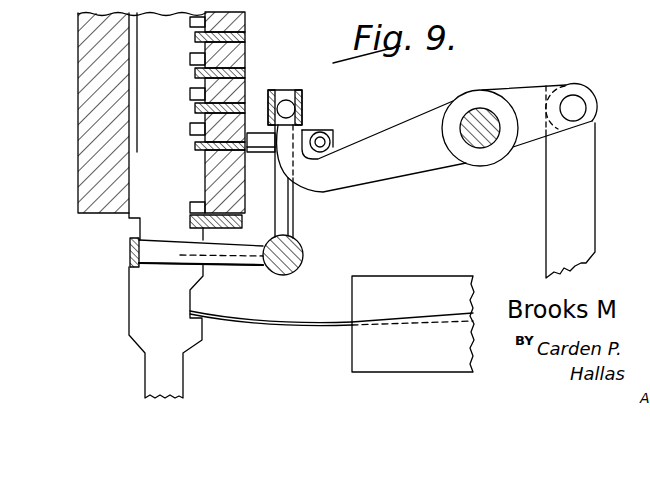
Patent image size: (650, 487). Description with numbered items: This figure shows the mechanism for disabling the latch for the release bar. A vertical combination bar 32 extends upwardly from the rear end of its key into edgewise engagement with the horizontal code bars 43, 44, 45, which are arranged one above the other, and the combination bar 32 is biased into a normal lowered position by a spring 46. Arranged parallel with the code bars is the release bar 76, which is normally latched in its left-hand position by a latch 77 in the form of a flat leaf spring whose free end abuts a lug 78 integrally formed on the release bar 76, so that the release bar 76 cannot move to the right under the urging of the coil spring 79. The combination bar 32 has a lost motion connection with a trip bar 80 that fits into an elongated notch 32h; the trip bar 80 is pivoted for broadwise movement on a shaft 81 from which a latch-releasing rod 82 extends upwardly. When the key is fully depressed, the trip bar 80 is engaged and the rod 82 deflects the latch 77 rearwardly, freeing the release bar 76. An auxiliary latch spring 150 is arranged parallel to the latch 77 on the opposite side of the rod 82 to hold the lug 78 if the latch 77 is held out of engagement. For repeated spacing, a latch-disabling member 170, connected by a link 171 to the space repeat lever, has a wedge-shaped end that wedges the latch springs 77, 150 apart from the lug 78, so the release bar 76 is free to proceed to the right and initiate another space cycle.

The code bar 43 is at (245, 37).
The code bar 44 is at (245, 73).
The code bar 45 is at (195, 108).
The auxiliary latch spring 150 is at (273, 89).
The lug 78 is at (284, 90).
The latch 77 is at (300, 105).
The coil spring 79 is at (323, 132).
The latch-disabling member 170 is at (423, 97).
The link 171 is at (588, 175).
The release bar 76 is at (257, 148).
The latch-releasing rod 82 is at (291, 207).
The shaft 81 is at (303, 249).
The trip bar 80 is at (131, 248).
The combination bar 32 is at (135, 318).
The elongated notch 32h is at (137, 224).
The spring 46 is at (306, 326).